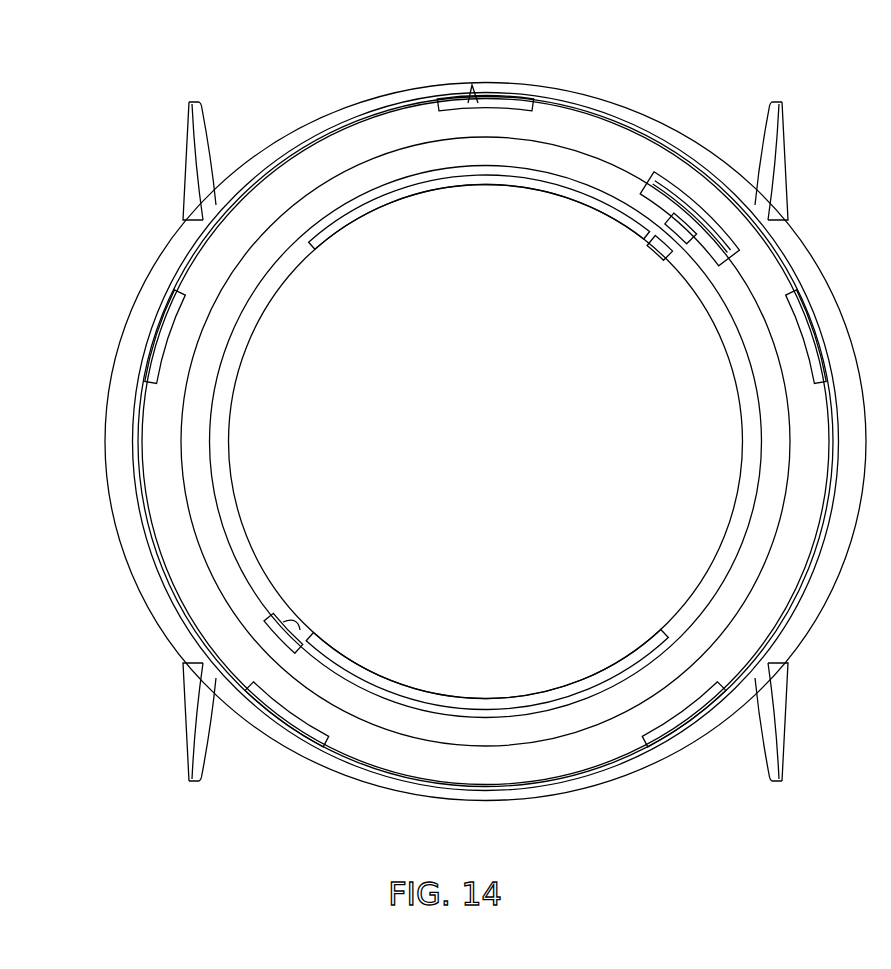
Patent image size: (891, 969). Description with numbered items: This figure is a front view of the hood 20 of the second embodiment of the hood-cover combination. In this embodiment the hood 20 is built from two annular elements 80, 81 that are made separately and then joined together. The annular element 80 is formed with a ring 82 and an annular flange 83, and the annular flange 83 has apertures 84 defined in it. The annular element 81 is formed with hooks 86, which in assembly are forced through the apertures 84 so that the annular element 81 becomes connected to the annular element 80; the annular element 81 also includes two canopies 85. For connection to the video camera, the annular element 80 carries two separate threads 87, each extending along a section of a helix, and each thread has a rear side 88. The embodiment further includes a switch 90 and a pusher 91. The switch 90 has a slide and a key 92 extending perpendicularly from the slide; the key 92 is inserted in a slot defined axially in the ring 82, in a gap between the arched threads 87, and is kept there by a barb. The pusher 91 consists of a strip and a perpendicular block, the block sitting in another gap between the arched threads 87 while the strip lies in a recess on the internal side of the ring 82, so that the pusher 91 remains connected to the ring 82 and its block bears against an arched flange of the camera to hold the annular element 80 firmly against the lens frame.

The hood 20 is at (330, 42).
The annular element 80 is at (306, 203).
The annular element 81 is at (377, 97).
The ring 82 is at (190, 466).
The annular flange 83 is at (558, 122).
The apertures 84 is at (476, 103).
The canopies 85 is at (512, 93).
The hooks 86 is at (165, 328).
The threads 87 is at (258, 312).
The rear side 88 is at (363, 208).
The switch 90 is at (718, 212).
The pusher 91 is at (292, 618).
The key 92 is at (657, 260).